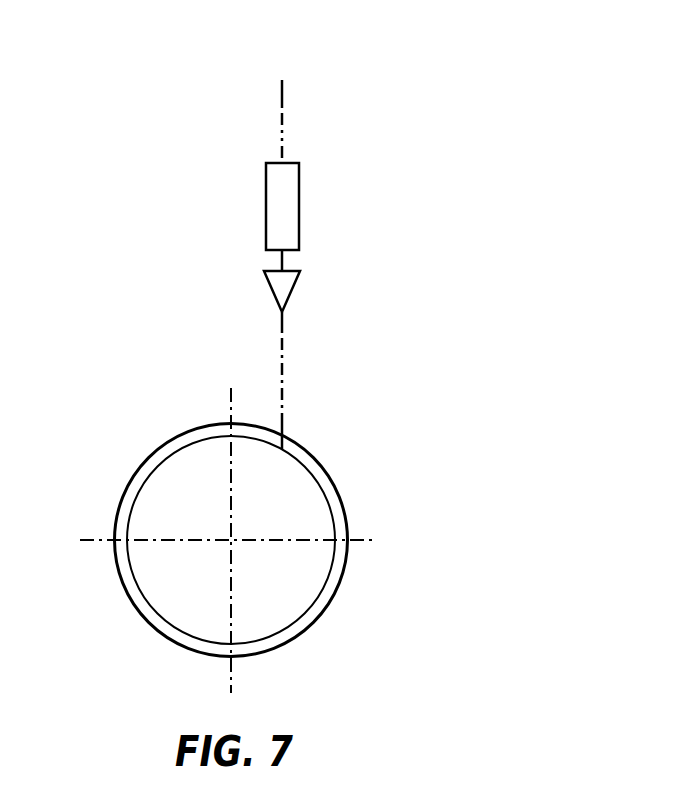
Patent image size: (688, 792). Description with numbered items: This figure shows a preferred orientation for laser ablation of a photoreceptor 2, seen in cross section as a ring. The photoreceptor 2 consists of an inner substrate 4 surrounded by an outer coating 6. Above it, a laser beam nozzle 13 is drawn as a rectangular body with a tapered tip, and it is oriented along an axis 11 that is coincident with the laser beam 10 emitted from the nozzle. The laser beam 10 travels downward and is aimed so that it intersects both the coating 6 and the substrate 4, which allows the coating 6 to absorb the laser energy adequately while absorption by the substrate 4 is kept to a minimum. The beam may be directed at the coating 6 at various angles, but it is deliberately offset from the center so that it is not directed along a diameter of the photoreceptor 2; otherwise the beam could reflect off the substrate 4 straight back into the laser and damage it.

The photoreceptor 2 is at (163, 346).
The substrate 4 is at (165, 617).
The coating 6 is at (347, 527).
The laser beam 10 is at (282, 378).
The axis 11 is at (282, 142).
The laser beam nozzle 13 is at (296, 290).